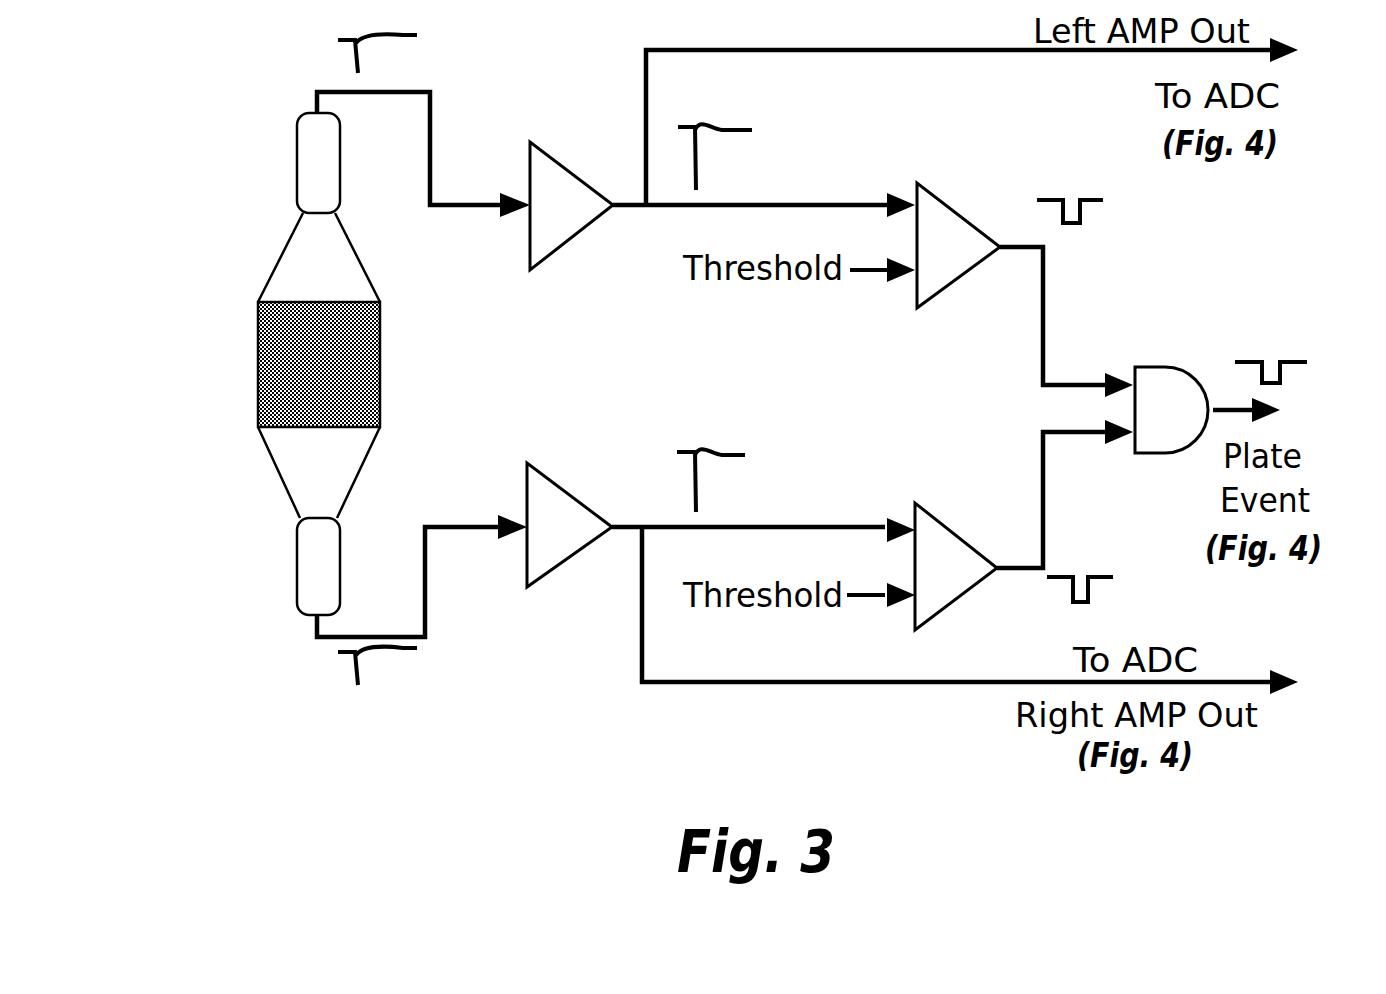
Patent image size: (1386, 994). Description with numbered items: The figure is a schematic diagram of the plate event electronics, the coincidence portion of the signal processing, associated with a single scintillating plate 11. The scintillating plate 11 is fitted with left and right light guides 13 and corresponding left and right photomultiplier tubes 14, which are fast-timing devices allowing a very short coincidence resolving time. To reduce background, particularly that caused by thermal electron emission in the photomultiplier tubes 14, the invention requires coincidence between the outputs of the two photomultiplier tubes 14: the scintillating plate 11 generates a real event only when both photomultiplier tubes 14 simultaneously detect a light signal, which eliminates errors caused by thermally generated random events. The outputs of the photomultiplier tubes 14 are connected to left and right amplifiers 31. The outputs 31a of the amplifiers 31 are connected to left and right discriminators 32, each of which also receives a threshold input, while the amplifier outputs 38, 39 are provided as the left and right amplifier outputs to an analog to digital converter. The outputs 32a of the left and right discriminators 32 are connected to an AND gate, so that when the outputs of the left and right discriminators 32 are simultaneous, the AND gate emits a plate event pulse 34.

The scintillating plate 11 is at (258, 360).
The light guide 13 is at (356, 241).
The photomultiplier tube 14 is at (340, 157).
The amplifier 31 is at (545, 255).
The output of amplifier 31a is at (627, 207).
The discriminator 32 is at (967, 268).
The output of discriminator 32a is at (1022, 242).
The plate event pulse 34 is at (1310, 380).
The output to analog to digital converter 38 is at (673, 48).
The output to analog to digital converter 39 is at (680, 683).